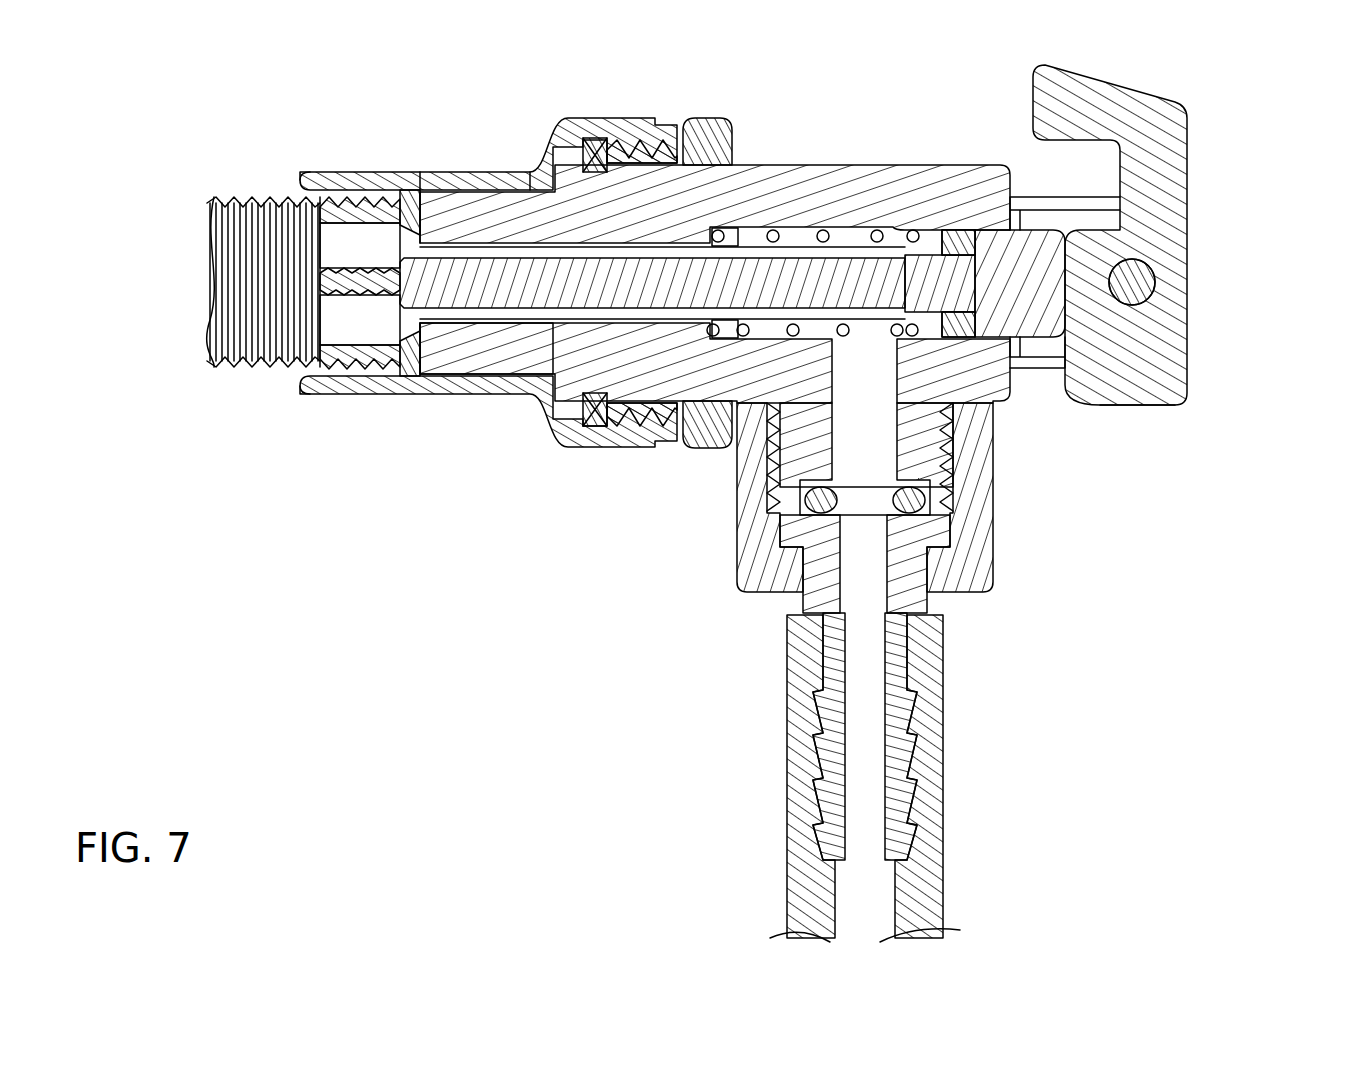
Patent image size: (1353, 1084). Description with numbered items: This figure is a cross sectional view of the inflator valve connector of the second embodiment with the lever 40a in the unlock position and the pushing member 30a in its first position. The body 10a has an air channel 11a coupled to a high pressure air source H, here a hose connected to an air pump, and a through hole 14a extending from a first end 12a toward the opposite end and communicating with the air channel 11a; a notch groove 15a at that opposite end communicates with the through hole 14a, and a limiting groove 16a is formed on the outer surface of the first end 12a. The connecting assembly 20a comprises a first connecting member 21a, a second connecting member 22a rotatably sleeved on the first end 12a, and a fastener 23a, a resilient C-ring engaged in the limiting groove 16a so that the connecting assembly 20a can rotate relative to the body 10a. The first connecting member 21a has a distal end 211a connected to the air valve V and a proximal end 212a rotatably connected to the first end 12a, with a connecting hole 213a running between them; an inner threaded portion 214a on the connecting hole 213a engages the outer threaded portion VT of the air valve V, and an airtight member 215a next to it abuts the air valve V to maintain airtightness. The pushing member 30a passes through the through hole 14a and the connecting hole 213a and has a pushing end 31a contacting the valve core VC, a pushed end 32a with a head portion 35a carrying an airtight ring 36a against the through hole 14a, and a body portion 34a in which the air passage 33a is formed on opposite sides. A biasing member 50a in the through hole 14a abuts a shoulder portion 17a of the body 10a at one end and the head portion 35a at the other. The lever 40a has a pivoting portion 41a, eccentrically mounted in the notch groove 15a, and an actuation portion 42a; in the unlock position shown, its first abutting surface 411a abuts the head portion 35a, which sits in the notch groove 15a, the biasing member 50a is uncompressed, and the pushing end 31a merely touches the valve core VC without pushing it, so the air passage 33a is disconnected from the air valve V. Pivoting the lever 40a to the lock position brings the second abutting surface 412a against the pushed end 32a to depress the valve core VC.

The body 10a is at (912, 152).
The air channel 11a is at (850, 342).
The first end 12a is at (425, 180).
The through hole 14a is at (645, 243).
The notch groove 15a is at (1047, 385).
The limiting groove 16a is at (603, 400).
The shoulder portion 17a is at (747, 245).
The connecting assembly 20a is at (518, 158).
The first connecting member 21a is at (468, 182).
The second connecting member 22a is at (705, 118).
The fastener 23a is at (592, 150).
The pushing member 30a is at (805, 236).
The pushing end 31a is at (393, 256).
The pushed end 32a is at (1090, 213).
The air passage 33a is at (573, 403).
The body portion 34a is at (525, 300).
The head portion 35a is at (1030, 255).
The airtight ring 36a is at (955, 240).
The lever 40a is at (1200, 115).
The pivoting portion 41a is at (1145, 368).
The actuation portion 42a is at (1060, 90).
The biasing member 50a is at (920, 500).
The distal end 211a is at (293, 401).
The proximal end 212a is at (655, 468).
The connecting hole 213a is at (458, 370).
The inner threaded portion 214a is at (300, 178).
The airtight member 215a is at (397, 375).
The first abutting surface 411a is at (1080, 318).
The second abutting surface 412a is at (1130, 405).
The high pressure air source H is at (930, 718).
The air valve V is at (210, 200).
The valve core VC is at (347, 362).
The outer threaded portion VT is at (233, 362).